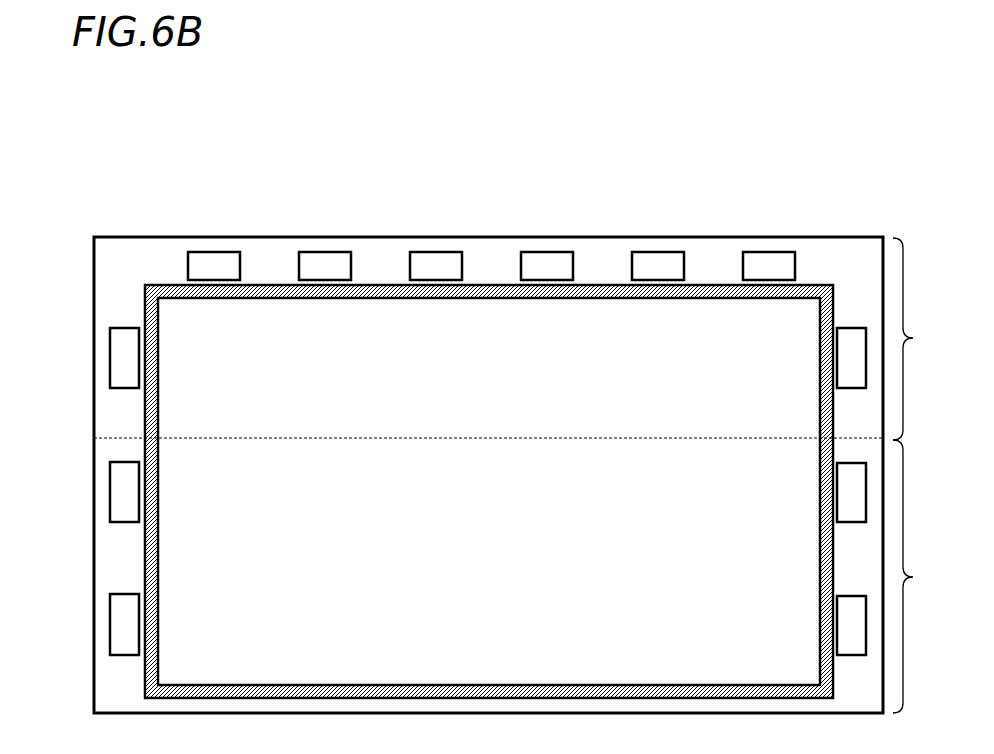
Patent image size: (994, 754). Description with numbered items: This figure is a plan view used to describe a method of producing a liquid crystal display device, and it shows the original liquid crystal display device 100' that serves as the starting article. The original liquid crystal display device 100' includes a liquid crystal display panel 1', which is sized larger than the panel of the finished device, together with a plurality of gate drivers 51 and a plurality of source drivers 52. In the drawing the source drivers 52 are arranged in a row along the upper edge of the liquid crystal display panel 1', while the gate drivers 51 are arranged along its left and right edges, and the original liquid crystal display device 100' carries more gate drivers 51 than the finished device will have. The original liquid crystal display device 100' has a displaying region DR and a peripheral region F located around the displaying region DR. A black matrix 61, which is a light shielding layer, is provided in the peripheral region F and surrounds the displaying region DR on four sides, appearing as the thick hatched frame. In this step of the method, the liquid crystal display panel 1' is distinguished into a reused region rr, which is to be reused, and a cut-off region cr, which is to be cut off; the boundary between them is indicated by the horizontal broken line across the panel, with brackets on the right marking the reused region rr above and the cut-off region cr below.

The original liquid crystal display device 100' is at (487, 430).
The liquid crystal display panel 1' is at (488, 441).
The peripheral region F is at (129, 273).
The black matrix 61 is at (172, 286).
The displaying region DR is at (509, 333).
The source drivers 52 is at (217, 252).
The gate drivers 51 is at (110, 358).
The reused region rr is at (914, 339).
The cut-off region cr is at (915, 576).